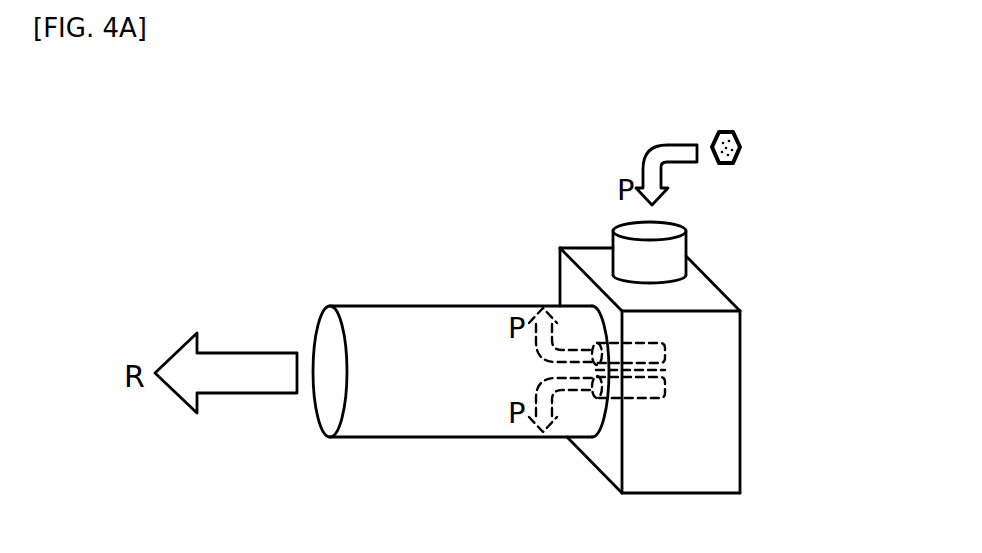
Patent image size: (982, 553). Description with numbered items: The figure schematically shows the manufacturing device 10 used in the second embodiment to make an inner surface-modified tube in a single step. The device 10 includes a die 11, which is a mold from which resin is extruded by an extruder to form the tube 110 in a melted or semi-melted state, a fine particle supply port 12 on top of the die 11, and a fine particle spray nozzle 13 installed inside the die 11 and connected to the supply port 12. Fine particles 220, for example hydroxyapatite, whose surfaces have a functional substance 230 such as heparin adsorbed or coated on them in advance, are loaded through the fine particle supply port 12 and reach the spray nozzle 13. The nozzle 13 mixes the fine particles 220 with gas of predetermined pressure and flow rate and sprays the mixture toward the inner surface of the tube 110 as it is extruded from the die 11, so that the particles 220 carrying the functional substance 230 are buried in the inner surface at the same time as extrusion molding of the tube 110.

The inner surface-modified tube manufacturing device 10 is at (704, 354).
The die 11 is at (740, 443).
The fine particle supply port 12 is at (687, 242).
The fine particle spray nozzle 13 is at (657, 355).
The tube 110 is at (432, 305).
The fine particles 220 is at (728, 132).
The functional substance 230 is at (771, 120).